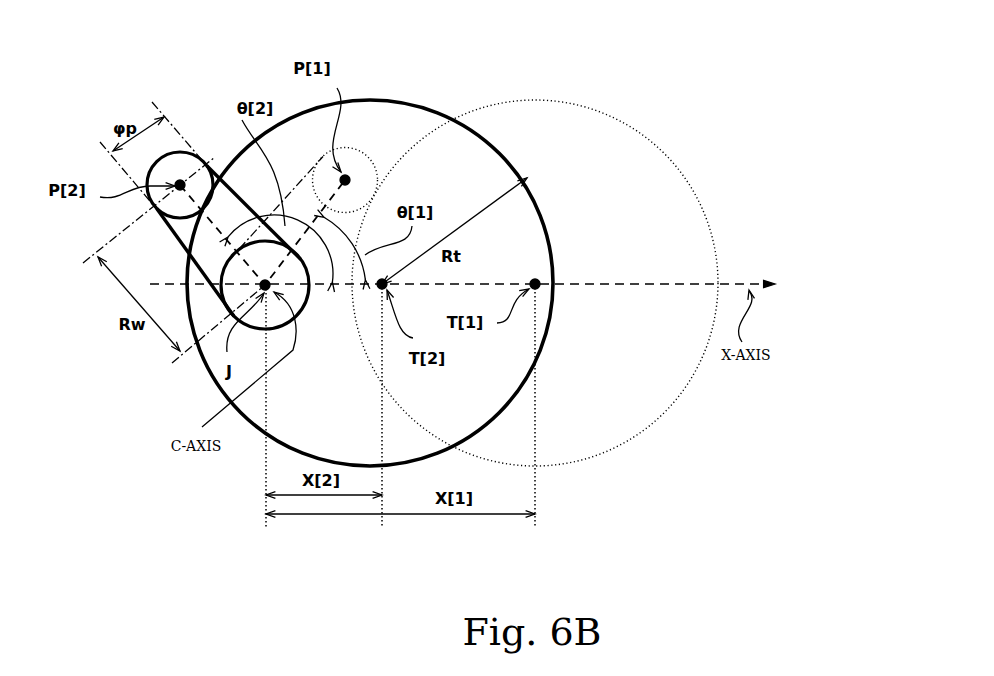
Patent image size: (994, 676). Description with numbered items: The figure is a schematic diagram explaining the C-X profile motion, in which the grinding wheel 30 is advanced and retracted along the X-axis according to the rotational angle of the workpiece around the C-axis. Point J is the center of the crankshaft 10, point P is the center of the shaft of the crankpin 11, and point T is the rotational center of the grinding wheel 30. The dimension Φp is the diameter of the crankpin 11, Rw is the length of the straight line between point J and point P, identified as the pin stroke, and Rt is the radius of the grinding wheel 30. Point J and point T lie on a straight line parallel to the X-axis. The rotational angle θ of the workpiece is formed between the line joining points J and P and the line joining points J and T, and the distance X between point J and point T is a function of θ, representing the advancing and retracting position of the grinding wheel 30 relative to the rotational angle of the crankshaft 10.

The crankshaft 10 is at (158, 232).
The crankpin 11 is at (172, 152).
The grinding wheel 30 is at (387, 101).